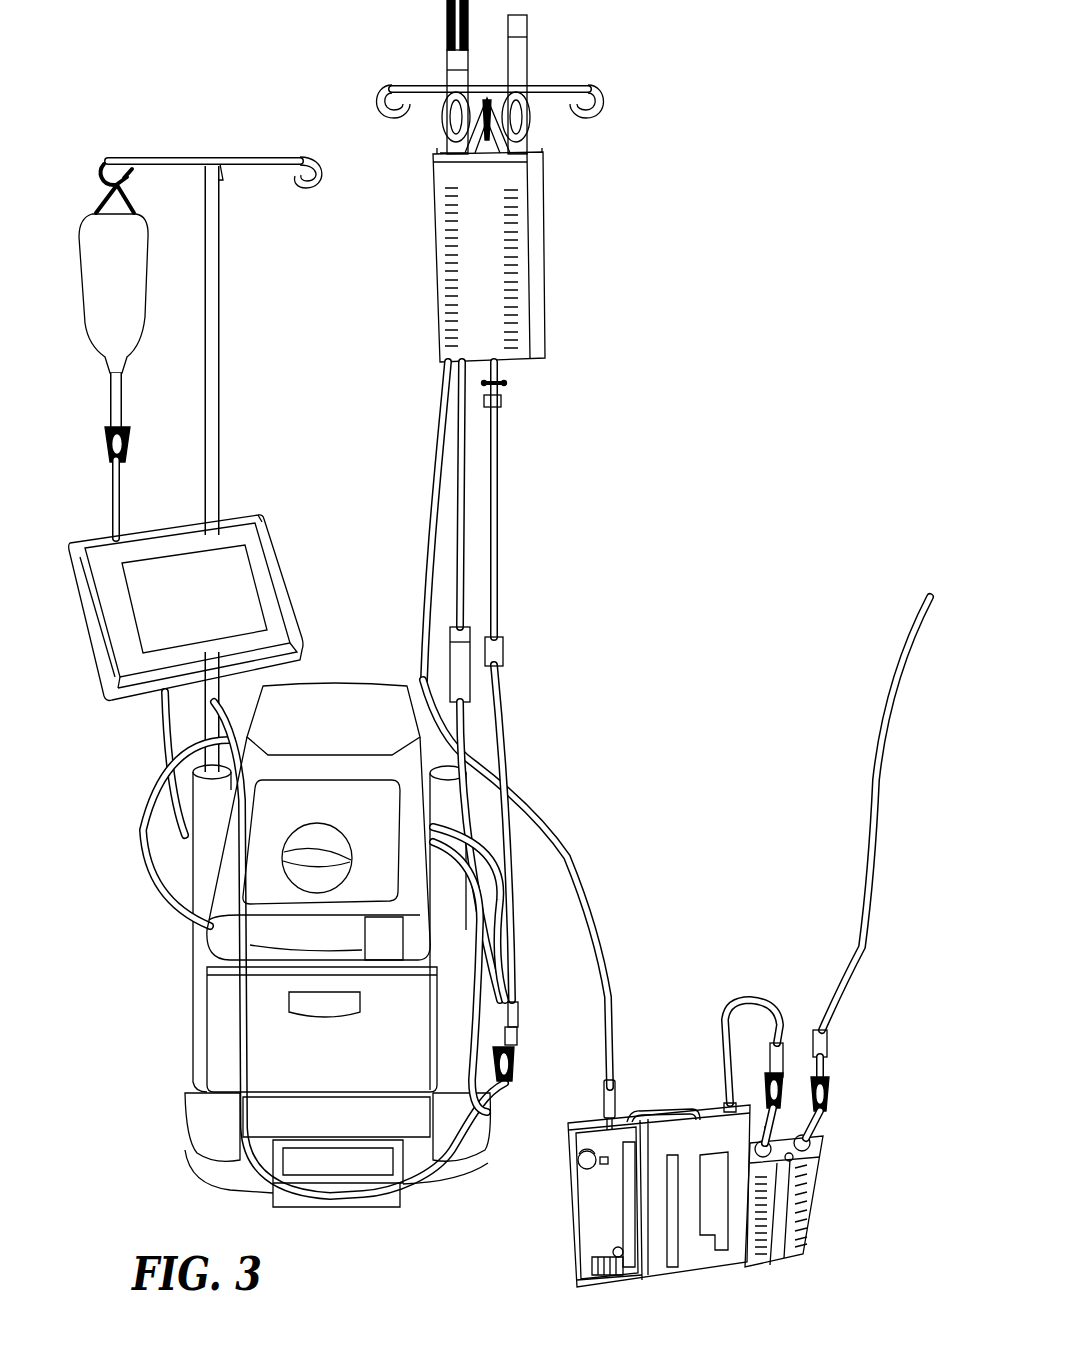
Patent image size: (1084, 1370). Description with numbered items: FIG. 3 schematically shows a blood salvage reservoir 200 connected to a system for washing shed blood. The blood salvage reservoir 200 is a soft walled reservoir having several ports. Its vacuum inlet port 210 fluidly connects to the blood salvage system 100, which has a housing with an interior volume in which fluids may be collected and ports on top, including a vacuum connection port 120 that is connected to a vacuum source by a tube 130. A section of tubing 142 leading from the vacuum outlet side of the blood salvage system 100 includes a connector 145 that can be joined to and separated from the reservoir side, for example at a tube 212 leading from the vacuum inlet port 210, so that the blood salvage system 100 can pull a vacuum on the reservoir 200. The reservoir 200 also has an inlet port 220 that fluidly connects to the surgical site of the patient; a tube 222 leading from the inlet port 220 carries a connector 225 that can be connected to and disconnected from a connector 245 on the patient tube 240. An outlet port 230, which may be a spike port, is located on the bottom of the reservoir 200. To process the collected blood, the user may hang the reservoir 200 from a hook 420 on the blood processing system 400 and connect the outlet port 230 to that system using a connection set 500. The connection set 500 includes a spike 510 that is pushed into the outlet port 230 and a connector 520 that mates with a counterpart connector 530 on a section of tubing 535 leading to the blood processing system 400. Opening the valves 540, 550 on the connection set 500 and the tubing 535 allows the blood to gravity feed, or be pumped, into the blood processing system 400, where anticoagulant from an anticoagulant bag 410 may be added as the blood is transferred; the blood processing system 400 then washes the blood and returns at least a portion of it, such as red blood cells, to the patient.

The blood salvage system 100 is at (680, 1237).
The vacuum connection port 120 is at (618, 1099).
The tube 130 is at (574, 857).
The section of tubing 142 is at (762, 1072).
The connector 145 is at (790, 1045).
The blood salvage reservoir 200 is at (485, 241).
The vacuum inlet port 210 is at (440, 150).
The tube 212 is at (791, 1155).
The inlet port 220 is at (518, 142).
The tube 222 is at (740, 1020).
The connector 225 is at (824, 1078).
The outlet port 230 is at (500, 373).
The patient tube 240 is at (878, 712).
The connector 245 is at (824, 1052).
The blood processing system 400 is at (232, 1016).
The anticoagulant bag 410 is at (134, 277).
The hook 420 is at (492, 104).
The connection set 500 is at (492, 531).
The spike 510 is at (500, 400).
The connector 520 is at (517, 1014).
The counterpart connector 530 is at (517, 1036).
The tubing 535 is at (492, 478).
The valve 540 is at (500, 648).
The valve 550 is at (507, 1085).